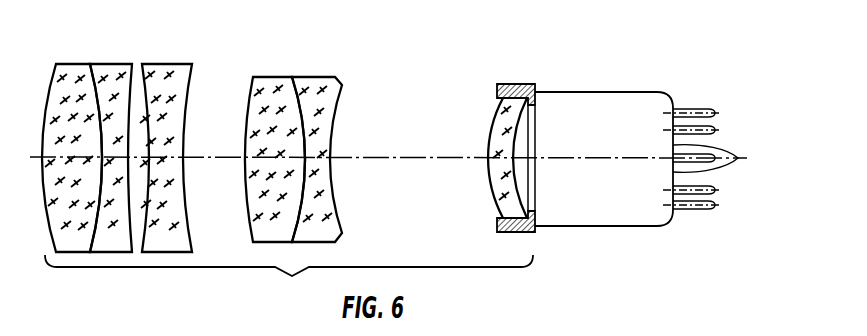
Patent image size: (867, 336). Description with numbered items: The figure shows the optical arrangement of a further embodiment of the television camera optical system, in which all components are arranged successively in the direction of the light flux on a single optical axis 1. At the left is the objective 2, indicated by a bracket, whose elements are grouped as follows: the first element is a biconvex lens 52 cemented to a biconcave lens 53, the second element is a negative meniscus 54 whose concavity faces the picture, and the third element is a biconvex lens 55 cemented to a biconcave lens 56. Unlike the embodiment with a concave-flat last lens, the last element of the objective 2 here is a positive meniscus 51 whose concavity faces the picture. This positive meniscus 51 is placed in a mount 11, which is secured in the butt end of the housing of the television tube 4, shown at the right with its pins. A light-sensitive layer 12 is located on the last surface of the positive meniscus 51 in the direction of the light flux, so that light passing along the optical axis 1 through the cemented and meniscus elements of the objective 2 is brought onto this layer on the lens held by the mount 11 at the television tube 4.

The optical axis 1 is at (426, 158).
The objective 2 is at (289, 282).
The television tube 4 is at (600, 100).
The mount 11 is at (507, 84).
The light-sensitive layer 12 is at (518, 200).
The positive meniscus 51 is at (532, 84).
The biconvex lens 52 is at (72, 77).
The biconcave lens 53 is at (116, 66).
The negative meniscus 54 is at (165, 76).
The biconvex lens 55 is at (273, 82).
The biconcave lens 56 is at (318, 82).